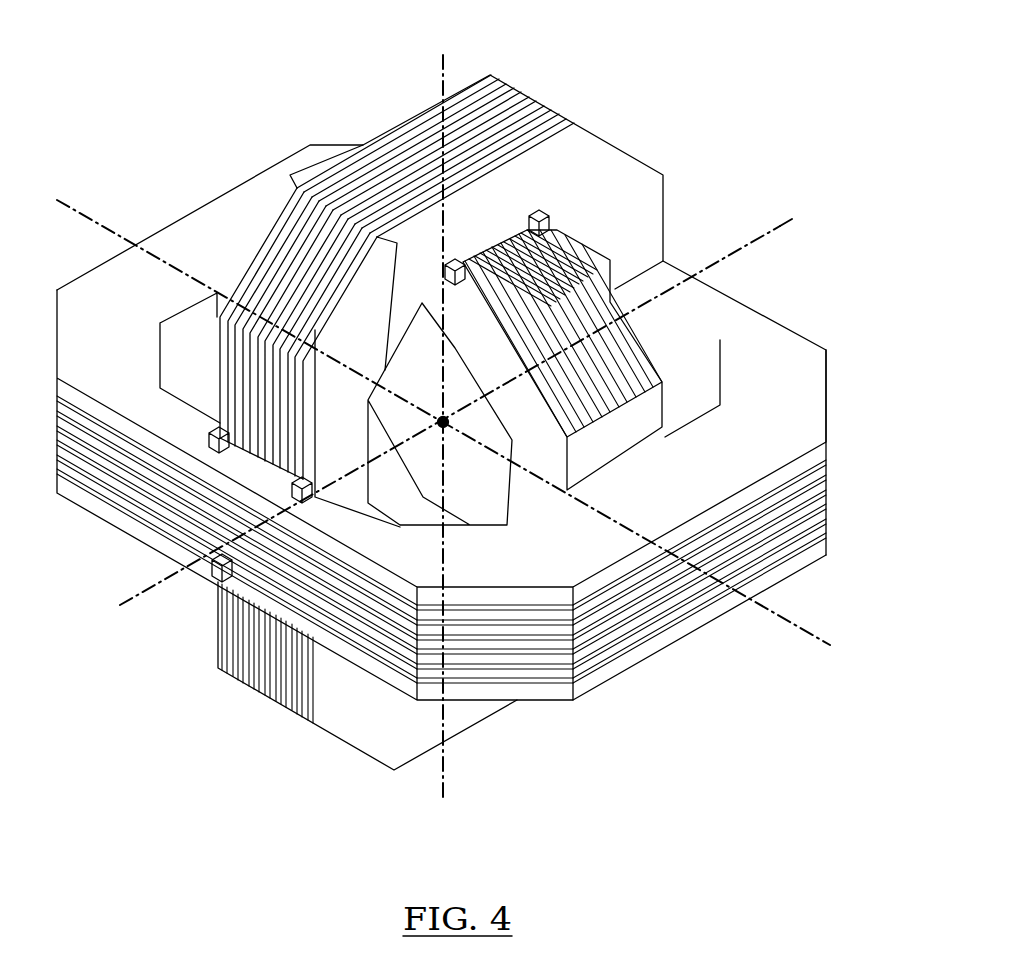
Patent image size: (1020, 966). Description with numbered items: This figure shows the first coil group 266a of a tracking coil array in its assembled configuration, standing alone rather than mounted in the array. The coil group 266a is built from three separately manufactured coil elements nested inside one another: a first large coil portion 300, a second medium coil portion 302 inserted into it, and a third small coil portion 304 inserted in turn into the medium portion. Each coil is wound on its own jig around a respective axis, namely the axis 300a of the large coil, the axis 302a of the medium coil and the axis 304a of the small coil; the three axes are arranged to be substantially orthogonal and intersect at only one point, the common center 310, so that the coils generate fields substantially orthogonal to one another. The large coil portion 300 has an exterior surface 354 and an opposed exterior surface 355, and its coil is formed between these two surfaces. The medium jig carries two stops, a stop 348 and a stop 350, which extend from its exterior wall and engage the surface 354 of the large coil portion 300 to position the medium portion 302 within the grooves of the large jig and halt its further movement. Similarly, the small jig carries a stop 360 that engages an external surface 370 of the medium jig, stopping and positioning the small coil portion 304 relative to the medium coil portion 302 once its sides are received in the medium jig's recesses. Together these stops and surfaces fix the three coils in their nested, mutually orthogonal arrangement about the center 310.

The first large coil portion 300 is at (475, 473).
The axis of the first coil portion 300a is at (446, 760).
The second medium coil portion 302 is at (410, 119).
The axis of the second coil portion 302a is at (805, 635).
The third small coil portion 304 is at (640, 327).
The axis of the third coil portion 304a is at (150, 598).
The common center 310 is at (445, 428).
The stop 348 is at (283, 483).
The stop 350 is at (632, 338).
The exterior surface 354 is at (802, 425).
The opposed exterior surface 355 is at (807, 568).
The stop 360 is at (540, 206).
The external surface 370 is at (634, 192).
The first coil group 266a is at (783, 200).